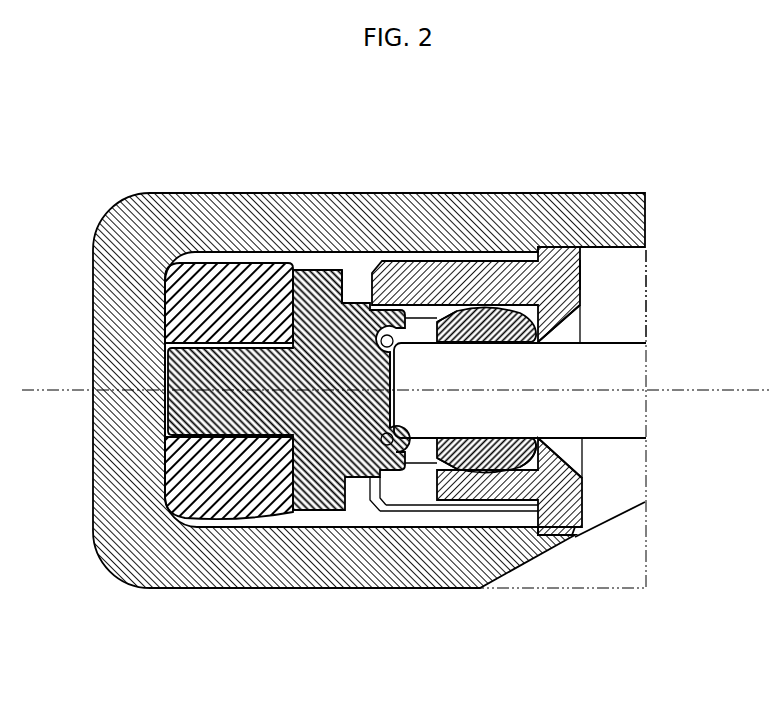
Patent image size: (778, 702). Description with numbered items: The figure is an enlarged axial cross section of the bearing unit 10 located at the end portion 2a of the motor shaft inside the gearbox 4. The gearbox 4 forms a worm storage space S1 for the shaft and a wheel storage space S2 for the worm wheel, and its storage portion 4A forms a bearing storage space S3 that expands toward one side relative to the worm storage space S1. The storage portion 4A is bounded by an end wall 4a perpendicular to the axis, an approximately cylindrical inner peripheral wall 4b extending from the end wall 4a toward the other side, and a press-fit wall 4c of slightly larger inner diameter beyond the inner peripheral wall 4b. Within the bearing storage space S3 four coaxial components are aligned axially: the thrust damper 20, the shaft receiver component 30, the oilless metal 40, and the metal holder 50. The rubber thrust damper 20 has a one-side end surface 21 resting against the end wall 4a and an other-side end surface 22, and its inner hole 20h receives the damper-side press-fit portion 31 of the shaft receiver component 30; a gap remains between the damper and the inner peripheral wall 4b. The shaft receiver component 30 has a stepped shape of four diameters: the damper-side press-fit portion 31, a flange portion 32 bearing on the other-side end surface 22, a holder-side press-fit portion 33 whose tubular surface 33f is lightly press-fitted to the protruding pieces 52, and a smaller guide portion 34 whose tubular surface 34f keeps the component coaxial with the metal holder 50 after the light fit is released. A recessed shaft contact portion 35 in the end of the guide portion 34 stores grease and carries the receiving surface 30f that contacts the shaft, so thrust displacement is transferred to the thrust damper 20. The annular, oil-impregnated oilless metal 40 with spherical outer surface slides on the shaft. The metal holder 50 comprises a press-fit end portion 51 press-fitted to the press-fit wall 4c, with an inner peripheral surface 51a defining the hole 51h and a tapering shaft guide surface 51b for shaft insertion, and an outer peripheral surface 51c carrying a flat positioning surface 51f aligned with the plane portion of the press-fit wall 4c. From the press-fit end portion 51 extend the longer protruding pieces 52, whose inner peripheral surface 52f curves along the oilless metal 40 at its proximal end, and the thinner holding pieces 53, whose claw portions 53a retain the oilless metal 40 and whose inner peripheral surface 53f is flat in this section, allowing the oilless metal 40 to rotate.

The end portion 2a is at (648, 398).
The gearbox 4 is at (66, 176).
The storage portion 4A is at (385, 189).
The end wall 4a is at (166, 410).
The inner peripheral wall 4b is at (240, 252).
The press-fit wall 4c is at (600, 246).
The bearing unit 10 is at (597, 270).
The thrust damper 20 is at (169, 333).
The inner hole 20h is at (166, 346).
The one-side end surface 21 is at (166, 314).
The other-side end surface 22 is at (296, 268).
The shaft receiver component 30 is at (292, 518).
The receiving surface 30f is at (394, 376).
The damper-side press-fit portion 31 is at (166, 440).
The flange portion 32 is at (306, 513).
The holder-side press-fit portion 33 is at (368, 506).
The tubular surface 33f is at (378, 512).
The guide portion 34 is at (383, 503).
The tubular surface 34f is at (404, 511).
The shaft contact portion 35 is at (396, 436).
The oilless metal 40 is at (542, 396).
The metal holder 50 is at (588, 494).
The press-fit end portion 51 is at (596, 295).
The inner peripheral surface 51a is at (584, 344).
The shaft guide surface 51b is at (583, 312).
The outer peripheral surface 51c is at (551, 246).
The positioning surface 51f is at (562, 537).
The hole 51h is at (582, 456).
The protruding pieces 52 is at (460, 260).
The inner peripheral surface 52f is at (430, 306).
The holding pieces 53 is at (506, 474).
The claw portion 53a is at (466, 476).
The inner peripheral surface 53f is at (533, 468).
The worm storage space S1 is at (634, 272).
The wheel storage space S2 is at (617, 582).
The bearing storage space S3 is at (356, 258).